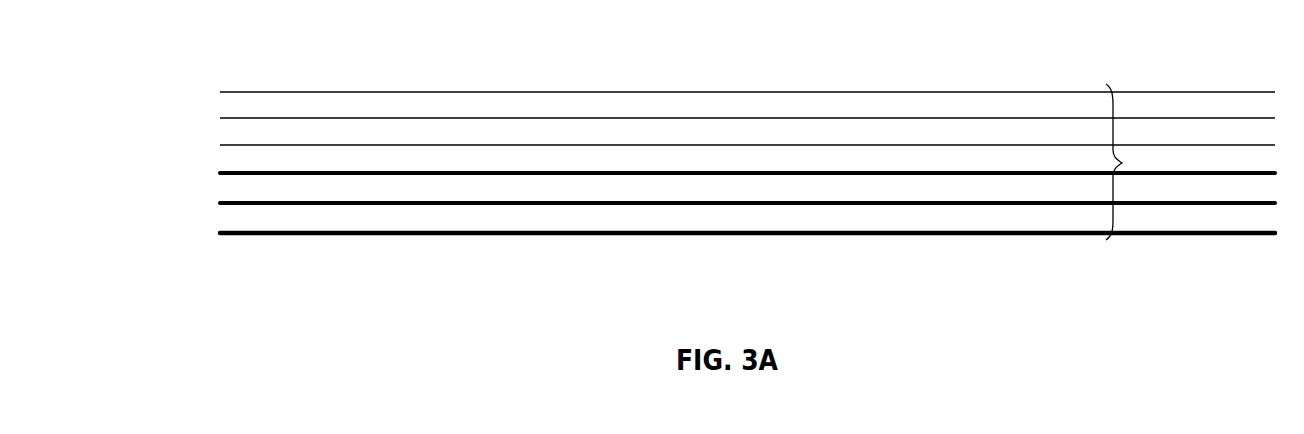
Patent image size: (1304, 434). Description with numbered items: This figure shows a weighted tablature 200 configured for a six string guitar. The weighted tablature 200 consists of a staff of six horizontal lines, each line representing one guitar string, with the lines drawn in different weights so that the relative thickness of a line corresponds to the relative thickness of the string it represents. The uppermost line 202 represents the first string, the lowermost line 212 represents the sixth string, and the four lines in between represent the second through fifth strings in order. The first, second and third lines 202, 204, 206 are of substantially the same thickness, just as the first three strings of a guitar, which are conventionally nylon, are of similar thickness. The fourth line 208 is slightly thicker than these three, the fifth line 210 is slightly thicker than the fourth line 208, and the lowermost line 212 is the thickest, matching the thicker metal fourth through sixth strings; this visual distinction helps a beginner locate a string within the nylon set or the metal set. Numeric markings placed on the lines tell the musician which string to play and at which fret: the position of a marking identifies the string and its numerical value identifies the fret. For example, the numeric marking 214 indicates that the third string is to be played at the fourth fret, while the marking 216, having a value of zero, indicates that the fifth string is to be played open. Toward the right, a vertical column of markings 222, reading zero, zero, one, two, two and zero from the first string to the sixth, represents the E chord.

The weighted tablature 200 is at (236, 44).
The uppermost line 202 is at (221, 92).
The second line 204 is at (221, 118).
The third line 206 is at (221, 145).
The fourth line 208 is at (221, 172).
The fifth line 210 is at (221, 202).
The lowermost line 212 is at (221, 232).
The numeric marking 214 is at (396, 139).
The marking 216 is at (745, 211).
The markings 222 is at (1122, 163).